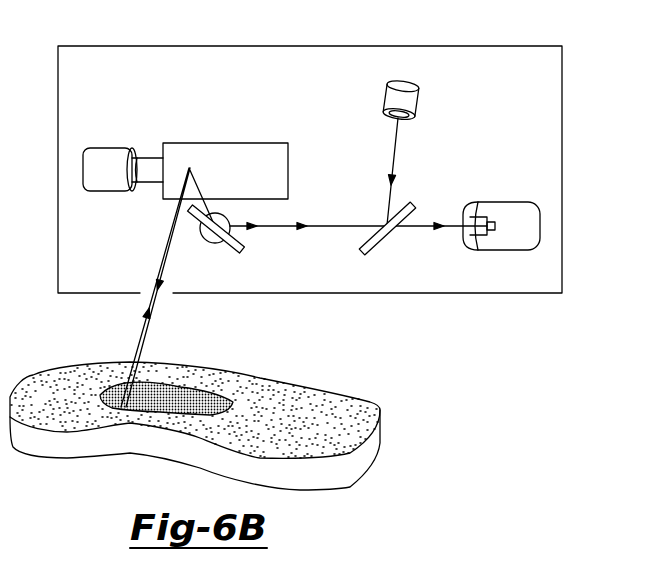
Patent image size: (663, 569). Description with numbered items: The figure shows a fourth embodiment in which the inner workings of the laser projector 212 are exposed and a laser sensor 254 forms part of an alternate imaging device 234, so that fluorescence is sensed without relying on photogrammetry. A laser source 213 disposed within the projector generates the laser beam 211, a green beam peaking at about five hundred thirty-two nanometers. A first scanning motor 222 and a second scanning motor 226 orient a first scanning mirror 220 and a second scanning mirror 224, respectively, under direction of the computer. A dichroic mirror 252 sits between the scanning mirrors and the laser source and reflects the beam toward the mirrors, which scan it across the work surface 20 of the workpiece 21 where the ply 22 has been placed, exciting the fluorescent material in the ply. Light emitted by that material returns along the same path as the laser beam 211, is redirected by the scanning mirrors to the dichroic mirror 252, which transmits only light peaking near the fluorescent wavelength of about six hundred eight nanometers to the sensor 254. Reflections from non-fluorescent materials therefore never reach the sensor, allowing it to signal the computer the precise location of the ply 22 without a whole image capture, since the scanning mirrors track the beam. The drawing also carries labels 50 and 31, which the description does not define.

The laser projector 212 is at (330, 46).
The laser marking system 50 is at (104, 128).
The first scanning motor 222 is at (119, 182).
The first scanning mirror 220 is at (228, 182).
The laser beam 211 is at (392, 166).
The second scanning motor 226 is at (203, 238).
The second scanning mirror 224 is at (245, 253).
The laser source 213 is at (414, 100).
The dichroic mirror 252 is at (383, 237).
The alternate imaging device 234 is at (531, 238).
The laser sensor 254 is at (485, 221).
The work surface 20 is at (292, 392).
The ply 22 is at (222, 398).
The mark 31 is at (182, 410).
The workpiece 21 is at (297, 477).